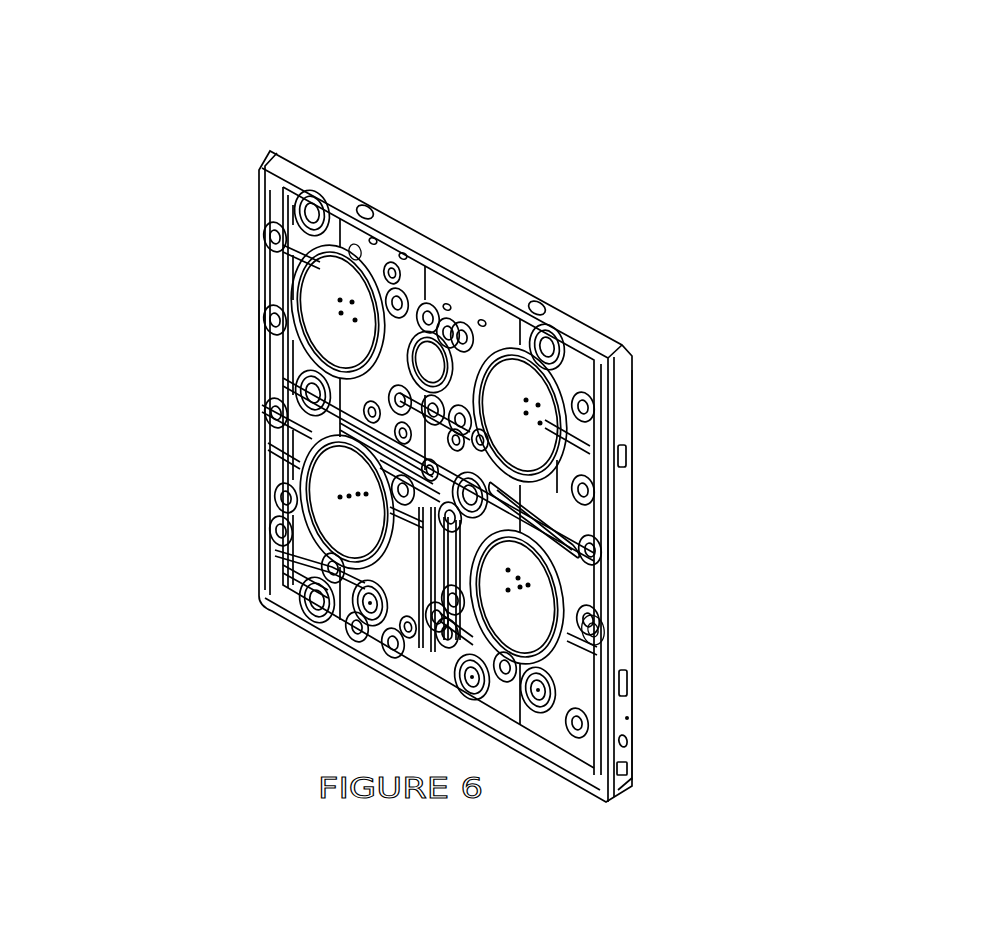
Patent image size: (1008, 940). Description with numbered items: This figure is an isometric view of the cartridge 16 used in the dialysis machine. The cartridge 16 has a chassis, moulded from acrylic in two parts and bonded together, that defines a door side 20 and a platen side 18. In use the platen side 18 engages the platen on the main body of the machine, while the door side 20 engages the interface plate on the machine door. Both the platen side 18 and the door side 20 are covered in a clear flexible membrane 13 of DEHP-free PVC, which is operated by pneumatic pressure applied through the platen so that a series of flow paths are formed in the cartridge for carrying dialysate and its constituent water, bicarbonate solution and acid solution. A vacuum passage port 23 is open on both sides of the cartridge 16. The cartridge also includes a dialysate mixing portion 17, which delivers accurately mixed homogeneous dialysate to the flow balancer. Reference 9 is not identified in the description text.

The cartridge 16 is at (692, 276).
The membrane 13 is at (356, 248).
The platen side 18 is at (265, 340).
The upper side edge region 9 is at (647, 373).
The door side 20 is at (637, 543).
The vacuum passage port 23 is at (603, 632).
The dialysate mixing portion 17 is at (670, 580).